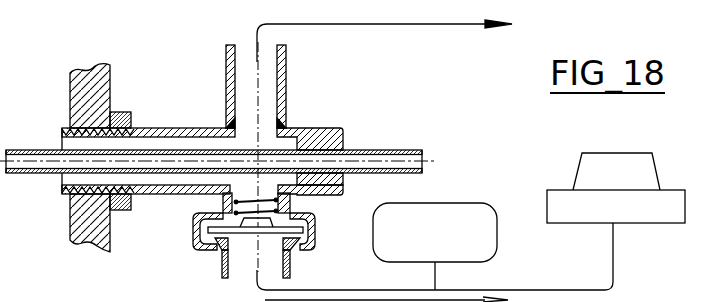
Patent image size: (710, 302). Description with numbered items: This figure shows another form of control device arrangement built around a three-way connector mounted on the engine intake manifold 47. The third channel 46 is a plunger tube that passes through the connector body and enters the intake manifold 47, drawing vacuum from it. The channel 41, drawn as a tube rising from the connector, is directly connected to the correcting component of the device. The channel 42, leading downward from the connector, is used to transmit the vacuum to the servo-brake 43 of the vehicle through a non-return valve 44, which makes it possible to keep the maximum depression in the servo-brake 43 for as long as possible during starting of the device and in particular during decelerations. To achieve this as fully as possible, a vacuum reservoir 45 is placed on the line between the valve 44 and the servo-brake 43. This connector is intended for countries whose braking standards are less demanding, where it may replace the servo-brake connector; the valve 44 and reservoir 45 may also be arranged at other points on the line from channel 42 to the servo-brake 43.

The channel 41 is at (250, 80).
The channel 42 is at (243, 265).
The servo-brake 43 is at (625, 220).
The non-return valve 44 is at (315, 230).
The vacuum reservoir 45 is at (443, 247).
The third channel 46 is at (372, 150).
The intake manifold 47 is at (83, 102).